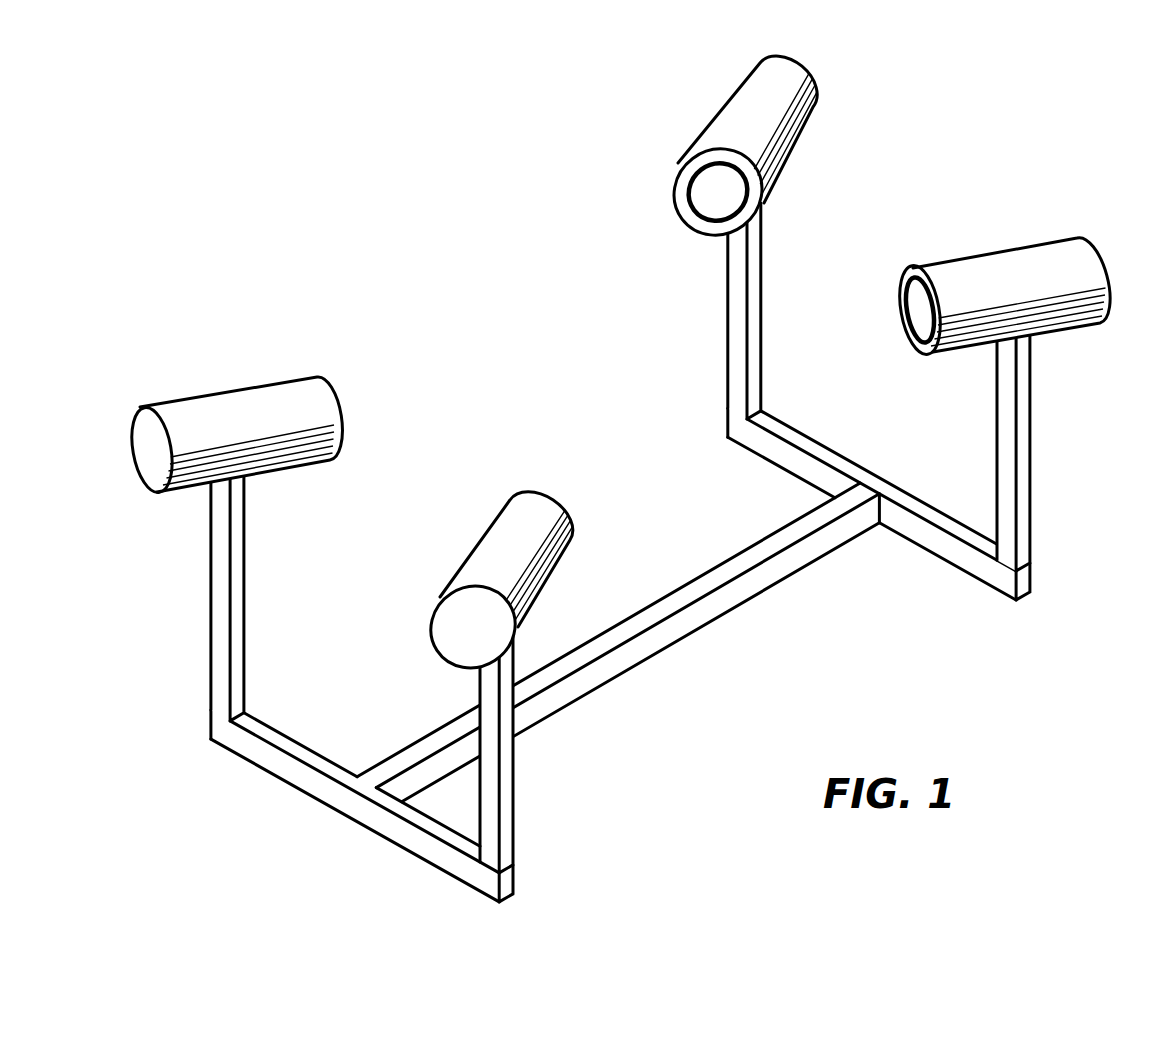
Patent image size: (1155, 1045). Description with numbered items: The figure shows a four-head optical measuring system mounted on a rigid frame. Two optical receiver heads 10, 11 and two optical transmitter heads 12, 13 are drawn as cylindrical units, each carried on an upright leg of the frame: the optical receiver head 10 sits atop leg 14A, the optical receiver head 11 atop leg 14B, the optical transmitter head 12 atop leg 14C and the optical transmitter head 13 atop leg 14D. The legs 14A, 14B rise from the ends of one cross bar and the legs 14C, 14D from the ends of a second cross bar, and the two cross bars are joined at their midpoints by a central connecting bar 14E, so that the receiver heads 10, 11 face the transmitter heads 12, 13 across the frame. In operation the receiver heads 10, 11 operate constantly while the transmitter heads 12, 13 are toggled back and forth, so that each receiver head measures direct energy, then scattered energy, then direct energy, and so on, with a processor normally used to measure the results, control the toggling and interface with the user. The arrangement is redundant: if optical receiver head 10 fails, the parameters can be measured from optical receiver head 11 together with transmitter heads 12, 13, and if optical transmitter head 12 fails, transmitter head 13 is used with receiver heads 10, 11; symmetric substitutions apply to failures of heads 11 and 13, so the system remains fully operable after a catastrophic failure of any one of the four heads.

The optical receiver head 10 is at (695, 112).
The optical receiver head 11 is at (1010, 246).
The optical transmitter head 12 is at (250, 381).
The optical transmitter head 13 is at (460, 552).
The upright leg of frame 14A is at (723, 378).
The upright leg of frame 14B is at (1031, 526).
The upright leg of frame 14C is at (210, 668).
The upright leg of frame 14D is at (515, 822).
The central connecting bar of frame 14E is at (758, 550).